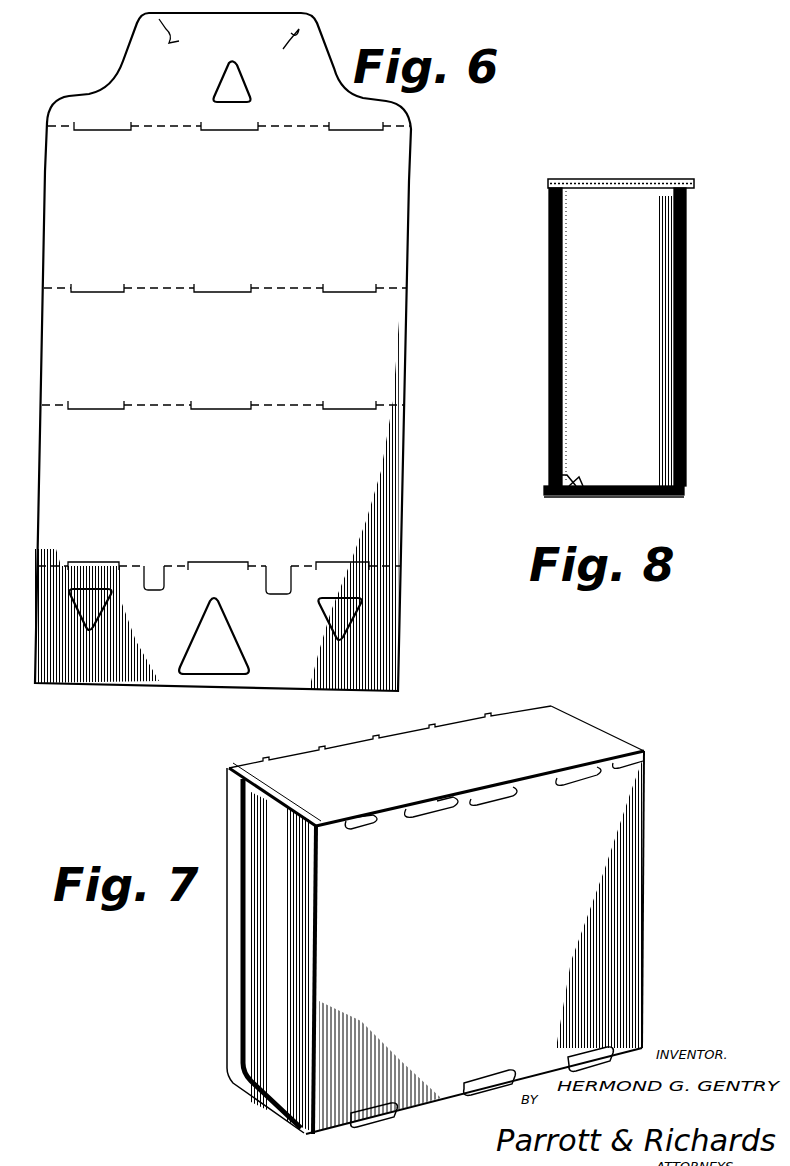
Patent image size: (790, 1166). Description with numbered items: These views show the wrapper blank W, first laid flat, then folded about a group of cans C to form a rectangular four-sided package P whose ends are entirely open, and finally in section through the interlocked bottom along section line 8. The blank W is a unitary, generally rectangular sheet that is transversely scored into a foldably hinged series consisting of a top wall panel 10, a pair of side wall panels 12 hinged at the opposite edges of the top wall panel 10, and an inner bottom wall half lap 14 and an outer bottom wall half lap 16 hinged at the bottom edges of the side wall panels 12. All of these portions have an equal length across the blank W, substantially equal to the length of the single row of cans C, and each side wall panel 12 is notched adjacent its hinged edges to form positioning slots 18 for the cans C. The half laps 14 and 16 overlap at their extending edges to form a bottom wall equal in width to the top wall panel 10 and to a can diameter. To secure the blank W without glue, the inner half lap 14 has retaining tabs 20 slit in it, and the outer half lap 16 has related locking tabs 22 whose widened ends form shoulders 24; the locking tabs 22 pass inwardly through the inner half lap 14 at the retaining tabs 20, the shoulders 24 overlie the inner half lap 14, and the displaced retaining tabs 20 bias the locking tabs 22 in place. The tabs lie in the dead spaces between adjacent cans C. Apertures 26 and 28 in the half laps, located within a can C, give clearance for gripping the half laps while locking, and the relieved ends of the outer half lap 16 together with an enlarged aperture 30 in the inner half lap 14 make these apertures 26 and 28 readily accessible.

In FIG. 7, the section line 8— 8 is at (336, 718).
In FIG. 6, the top wall panel 10 is at (396, 348).
In FIG. 8, the top wall panel 10 is at (605, 178).
In FIG. 7, the top wall panel 10 is at (565, 727).
In FIG. 6, the side wall panels 12 is at (396, 226).
In FIG. 8, the side wall panels 12 is at (548, 356).
In FIG. 7, the side wall panels 12 is at (641, 903).
In FIG. 6, the inner bottom wall half lap 14 is at (382, 636).
In FIG. 8, the inner bottom wall half lap 14 is at (686, 478).
In FIG. 7, the inner bottom wall half lap 14 is at (226, 1070).
In FIG. 6, the outer bottom wall half lap 16 is at (126, 66).
In FIG. 8, the outer bottom wall half lap 16 is at (636, 498).
In FIG. 7, the outer bottom wall half lap 16 is at (300, 1134).
In FIG. 6, the positioning slots 18 is at (73, 128).
In FIG. 8, the positioning slots 18 is at (547, 178).
In FIG. 7, the positioning slots 18 is at (262, 760).
In FIG. 6, the retaining tabs 20 is at (158, 588).
In FIG. 8, the retaining tabs 20 is at (580, 478).
In FIG. 6, the locking tabs 22 is at (165, 28).
In FIG. 8, the locking tabs 22 is at (566, 474).
In FIG. 6, the shoulders 24 is at (229, 41).
In FIG. 6, the apertures 26 is at (100, 596).
In FIG. 6, the apertures 28 is at (242, 88).
In FIG. 6, the enlarged aperture 30 is at (226, 620).
In FIG. 6, the wrapper blank W is at (414, 170).
In FIG. 8, the package P is at (690, 178).
In FIG. 7, the package P is at (645, 752).
In FIG. 8, the cans C is at (672, 320).
In FIG. 7, the cans C is at (248, 993).